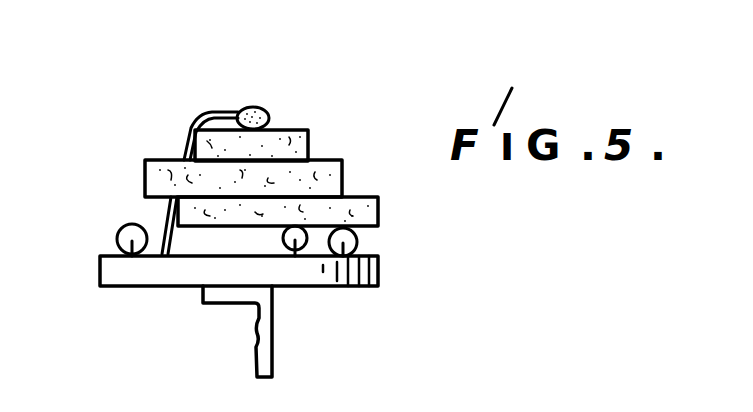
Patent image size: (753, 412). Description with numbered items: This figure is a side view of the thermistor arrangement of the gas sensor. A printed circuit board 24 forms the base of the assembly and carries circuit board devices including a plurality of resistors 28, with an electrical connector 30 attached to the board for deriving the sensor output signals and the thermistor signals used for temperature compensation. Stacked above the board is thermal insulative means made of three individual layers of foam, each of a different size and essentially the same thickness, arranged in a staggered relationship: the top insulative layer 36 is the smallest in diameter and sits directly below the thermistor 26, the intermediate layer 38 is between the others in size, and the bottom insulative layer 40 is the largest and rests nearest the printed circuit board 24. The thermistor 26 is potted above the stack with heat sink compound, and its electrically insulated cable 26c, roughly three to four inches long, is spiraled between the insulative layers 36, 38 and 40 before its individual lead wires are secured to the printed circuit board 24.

The printed circuit board 24 is at (328, 286).
The thermistor 26 is at (258, 108).
The electrically insulated cable 26c is at (207, 110).
The resistors 28 is at (118, 232).
The electrical connector 30 is at (257, 367).
The top insulative layer 36 is at (310, 142).
The intermediate insulative layer 38 is at (145, 178).
The bottom insulative layer 40 is at (367, 212).